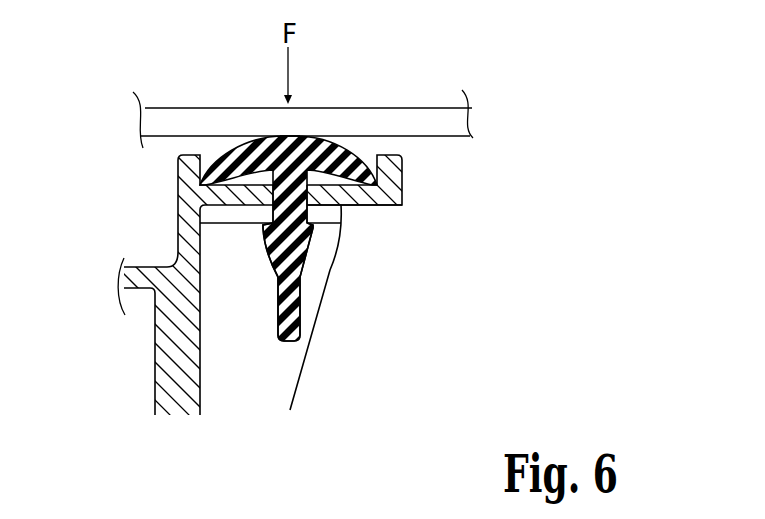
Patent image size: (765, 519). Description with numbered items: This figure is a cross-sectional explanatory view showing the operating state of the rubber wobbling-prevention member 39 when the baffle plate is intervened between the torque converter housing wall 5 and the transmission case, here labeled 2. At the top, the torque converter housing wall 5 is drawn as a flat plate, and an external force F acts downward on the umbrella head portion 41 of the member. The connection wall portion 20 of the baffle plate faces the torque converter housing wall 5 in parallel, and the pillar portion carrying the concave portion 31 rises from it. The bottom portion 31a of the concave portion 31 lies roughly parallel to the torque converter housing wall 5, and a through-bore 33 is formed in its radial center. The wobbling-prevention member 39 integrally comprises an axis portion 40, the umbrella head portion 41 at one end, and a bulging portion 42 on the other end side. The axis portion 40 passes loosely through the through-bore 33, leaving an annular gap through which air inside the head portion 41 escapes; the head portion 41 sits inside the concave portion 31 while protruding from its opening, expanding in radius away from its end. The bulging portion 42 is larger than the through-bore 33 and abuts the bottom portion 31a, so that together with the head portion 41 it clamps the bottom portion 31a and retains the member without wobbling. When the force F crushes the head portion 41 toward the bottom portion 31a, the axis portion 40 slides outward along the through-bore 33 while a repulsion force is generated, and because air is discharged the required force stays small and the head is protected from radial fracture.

The body panel 2 is at (154, 371).
The torque converter housing wall 5 is at (437, 118).
The connection wall portion 20 is at (150, 262).
The concave portion 31 is at (403, 180).
The bottom portion 31a is at (370, 197).
The through-bore 33 is at (341, 212).
The wobbling-prevention member 39 is at (313, 136).
The axis portion 40 is at (301, 313).
The umbrella head portion 41 is at (341, 135).
The bulging portion 42 is at (311, 253).